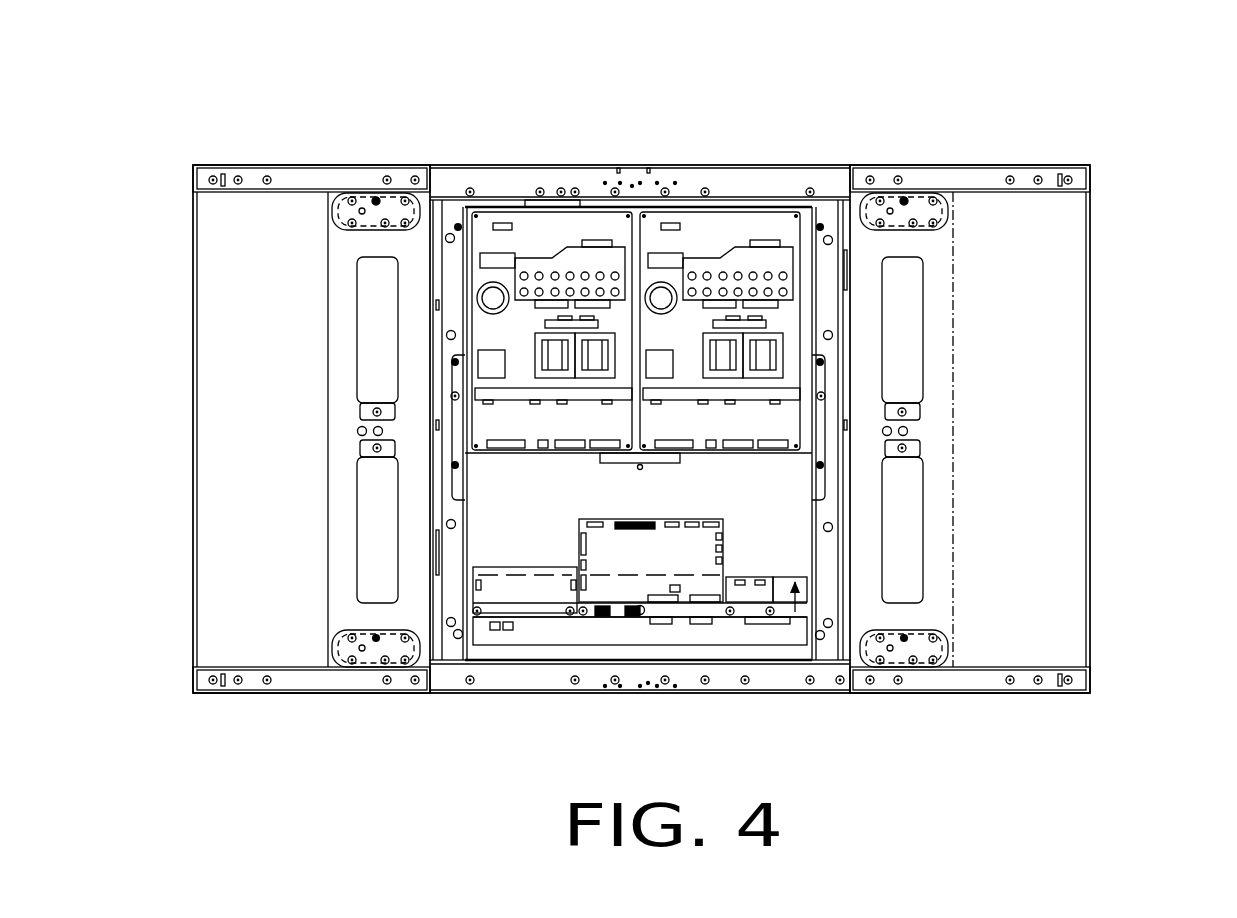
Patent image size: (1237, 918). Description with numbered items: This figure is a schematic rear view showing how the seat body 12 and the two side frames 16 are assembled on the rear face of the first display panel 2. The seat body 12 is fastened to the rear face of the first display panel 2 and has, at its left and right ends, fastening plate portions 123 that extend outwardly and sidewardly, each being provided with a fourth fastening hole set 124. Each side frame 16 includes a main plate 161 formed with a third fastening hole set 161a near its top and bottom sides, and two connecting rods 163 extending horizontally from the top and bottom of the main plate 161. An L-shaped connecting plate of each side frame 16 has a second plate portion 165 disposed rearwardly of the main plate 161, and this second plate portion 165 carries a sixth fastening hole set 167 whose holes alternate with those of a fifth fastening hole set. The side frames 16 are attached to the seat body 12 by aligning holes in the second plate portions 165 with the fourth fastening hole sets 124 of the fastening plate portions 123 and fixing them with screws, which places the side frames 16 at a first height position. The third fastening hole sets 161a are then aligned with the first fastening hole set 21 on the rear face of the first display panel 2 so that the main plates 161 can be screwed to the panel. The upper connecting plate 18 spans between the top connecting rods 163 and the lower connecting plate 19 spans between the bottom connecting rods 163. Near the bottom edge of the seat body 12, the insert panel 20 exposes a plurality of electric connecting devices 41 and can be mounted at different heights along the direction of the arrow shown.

The first display panel 2 is at (1090, 455).
The seat body 12 is at (735, 218).
The side frame 16 is at (245, 160).
The upper connecting plate 18 is at (563, 178).
The lower connecting plate 19 is at (533, 693).
The insert panel 20 is at (793, 622).
The first fastening hole set 21 is at (354, 236).
The electric connecting device 41 is at (663, 624).
The fastening plate portion 123 is at (460, 482).
The fourth fastening hole set 124 is at (455, 465).
The main plate 161 is at (340, 488).
The third fastening hole set 161a is at (350, 208).
The connecting rod 163 is at (300, 178).
The second plate portion 165 is at (440, 178).
The sixth fastening hole set 167 is at (455, 362).